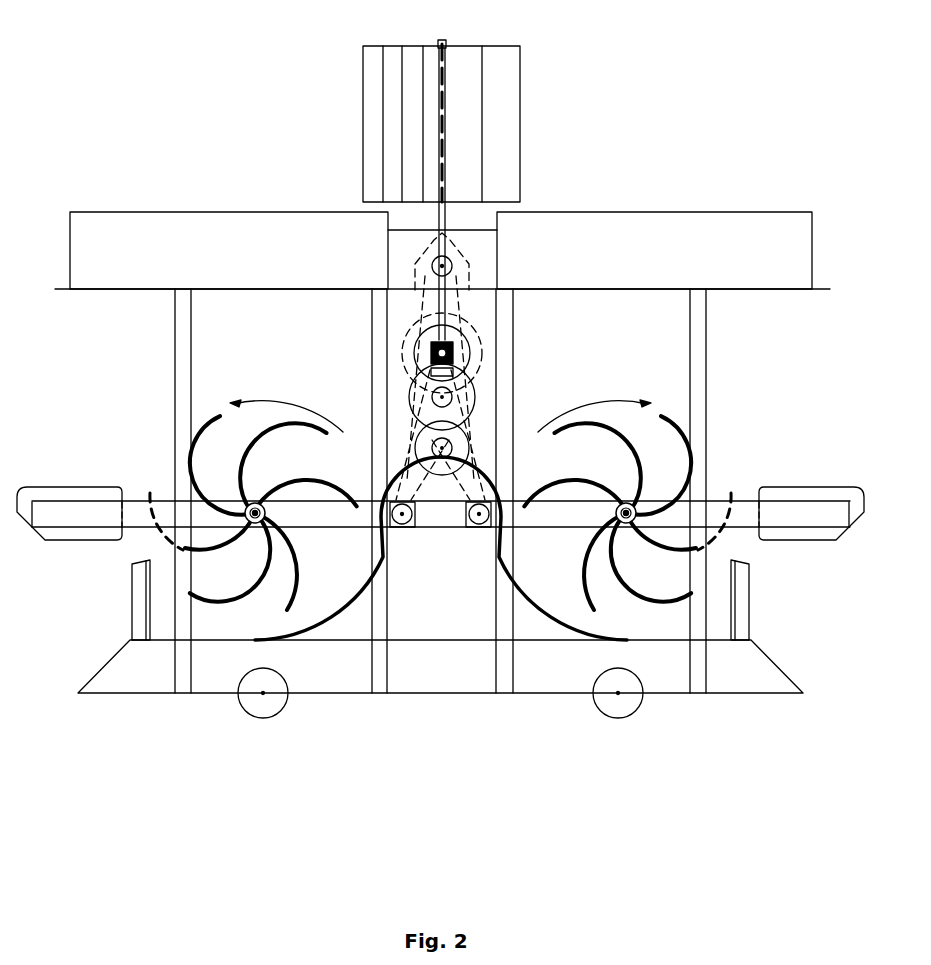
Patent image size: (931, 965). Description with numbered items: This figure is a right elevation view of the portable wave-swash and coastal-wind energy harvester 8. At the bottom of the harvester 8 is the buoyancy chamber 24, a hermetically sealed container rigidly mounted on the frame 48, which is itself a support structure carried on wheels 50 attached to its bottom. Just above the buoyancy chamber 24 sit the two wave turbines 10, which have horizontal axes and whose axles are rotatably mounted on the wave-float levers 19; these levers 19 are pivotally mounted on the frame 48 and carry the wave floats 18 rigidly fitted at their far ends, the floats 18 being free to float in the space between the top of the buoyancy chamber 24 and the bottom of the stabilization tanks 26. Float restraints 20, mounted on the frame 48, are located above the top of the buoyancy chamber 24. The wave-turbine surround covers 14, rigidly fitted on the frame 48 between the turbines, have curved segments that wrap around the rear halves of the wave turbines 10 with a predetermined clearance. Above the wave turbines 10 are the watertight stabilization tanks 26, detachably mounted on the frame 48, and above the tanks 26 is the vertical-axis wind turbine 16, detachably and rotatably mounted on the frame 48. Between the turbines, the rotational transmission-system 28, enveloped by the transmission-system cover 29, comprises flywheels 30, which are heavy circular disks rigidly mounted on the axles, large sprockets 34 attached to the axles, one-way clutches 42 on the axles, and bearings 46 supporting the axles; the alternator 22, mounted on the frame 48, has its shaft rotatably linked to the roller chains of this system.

The portable wave-swash & coastal-wind energy harvester 8 is at (268, 98).
The wave turbines 10 is at (205, 420).
The wave-turbine surround covers 14 is at (337, 612).
The wind turbines 16 is at (521, 88).
The wave floats 18 is at (78, 541).
The wave-float levers 19 is at (148, 500).
The float restraints 20 is at (132, 605).
The alternator 22 is at (462, 258).
The buoyancy chamber 24 is at (778, 671).
The stabilization tanks 26 is at (200, 212).
The rotational transmission-system 28 is at (388, 386).
The transmission-system cover 29 is at (387, 330).
The flywheels 30 is at (478, 336).
The large sprockets 34 is at (468, 356).
The one-way clutches 42 is at (402, 517).
The bearings 46 is at (405, 520).
The frame 48 is at (172, 329).
The wheels 50 is at (245, 708).